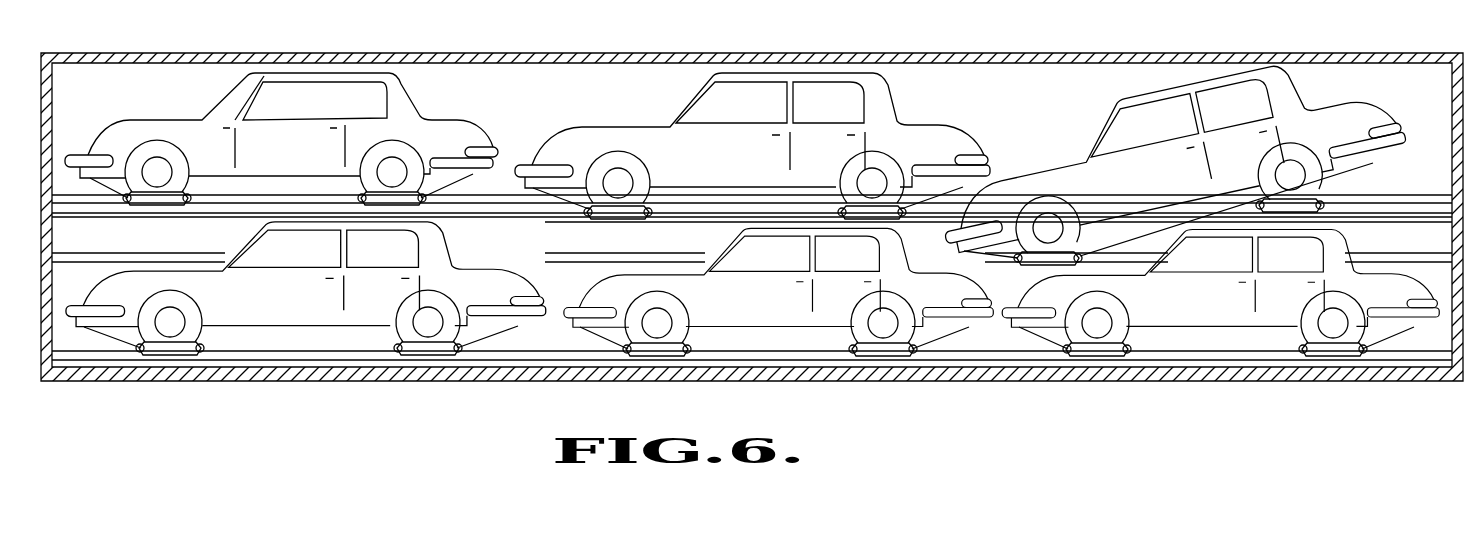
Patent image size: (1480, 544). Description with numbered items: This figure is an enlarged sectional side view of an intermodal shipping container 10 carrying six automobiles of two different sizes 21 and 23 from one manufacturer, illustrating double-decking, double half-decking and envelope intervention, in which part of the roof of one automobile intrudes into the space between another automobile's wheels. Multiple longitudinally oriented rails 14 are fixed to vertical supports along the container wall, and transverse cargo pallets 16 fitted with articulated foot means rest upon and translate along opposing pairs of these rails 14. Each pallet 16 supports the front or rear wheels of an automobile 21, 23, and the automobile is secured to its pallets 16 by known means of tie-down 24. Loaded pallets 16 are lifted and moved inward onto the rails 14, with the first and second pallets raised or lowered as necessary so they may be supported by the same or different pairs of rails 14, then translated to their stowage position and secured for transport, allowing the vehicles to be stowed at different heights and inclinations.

The intermodal shipping container 10 is at (1000, 50).
The longitudinally oriented rails 14 is at (1428, 195).
The transverse cargo pallets 16 is at (153, 192).
The automobile of a first size 21 is at (834, 74).
The automobile of a second size 23 is at (413, 117).
The tie-down 24 is at (607, 342).